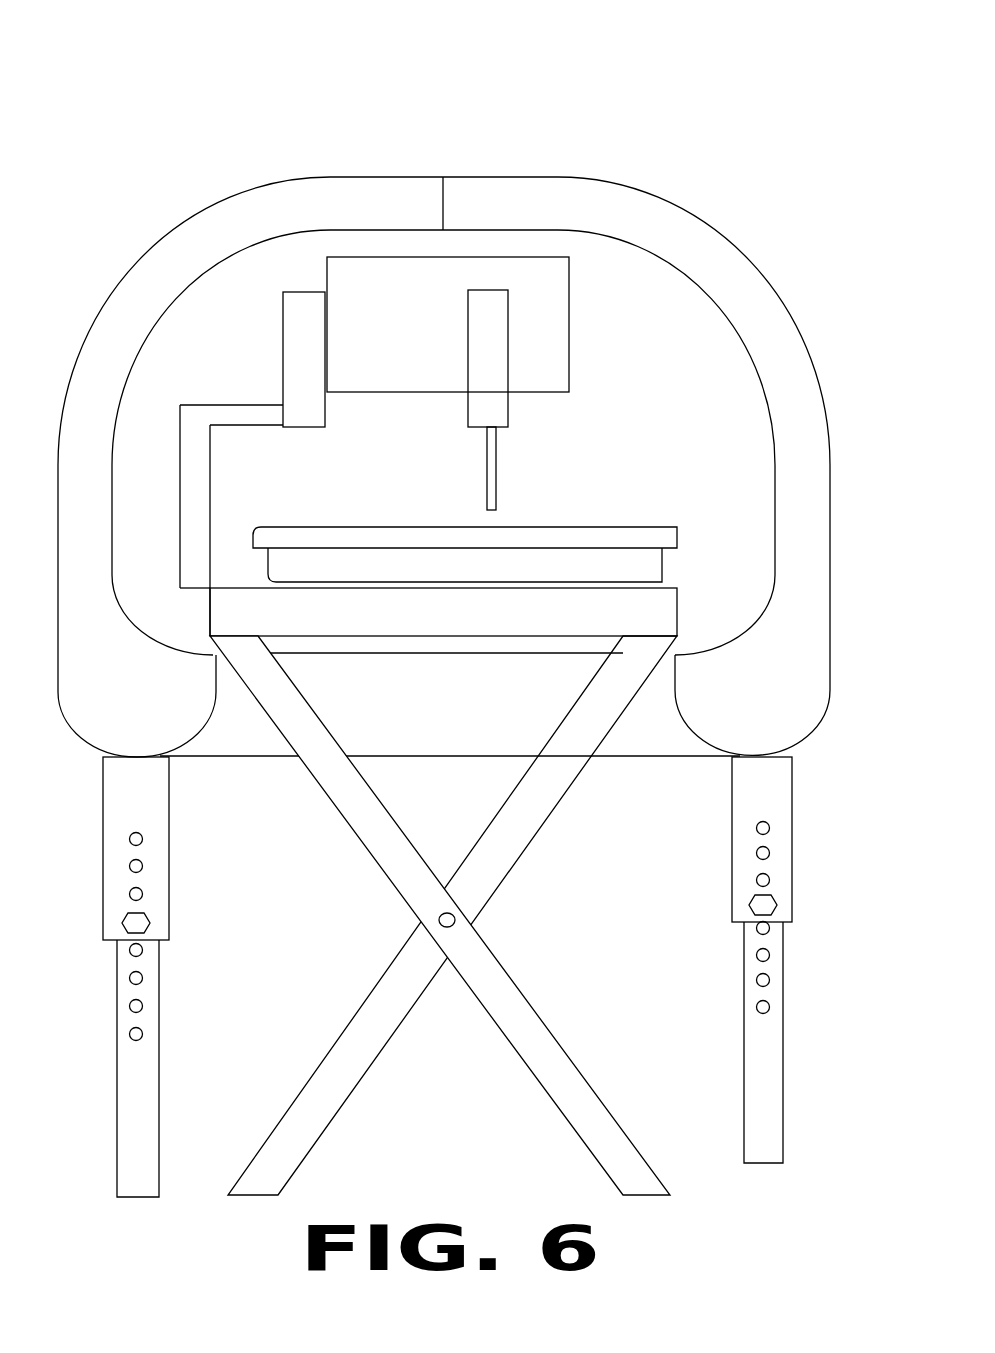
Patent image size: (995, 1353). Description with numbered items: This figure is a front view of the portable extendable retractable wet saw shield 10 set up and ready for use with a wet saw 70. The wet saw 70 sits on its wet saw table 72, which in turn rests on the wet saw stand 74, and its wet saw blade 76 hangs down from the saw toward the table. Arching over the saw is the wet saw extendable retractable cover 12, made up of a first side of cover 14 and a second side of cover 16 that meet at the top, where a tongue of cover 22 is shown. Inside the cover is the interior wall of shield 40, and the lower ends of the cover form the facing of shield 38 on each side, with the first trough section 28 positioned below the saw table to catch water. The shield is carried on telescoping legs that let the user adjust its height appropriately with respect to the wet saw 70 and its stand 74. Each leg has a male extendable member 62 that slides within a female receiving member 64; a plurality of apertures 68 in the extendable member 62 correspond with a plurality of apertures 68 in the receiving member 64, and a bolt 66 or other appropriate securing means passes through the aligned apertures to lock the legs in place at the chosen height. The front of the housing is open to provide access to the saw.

The portable extendable retractable wet saw shield 10 is at (183, 192).
The wet saw extendable retractable cover 12 is at (278, 158).
The first side of cover 14 is at (133, 286).
The second side of cover 16 is at (745, 277).
The tongue of cover 22 is at (482, 200).
The first trough section 28 is at (428, 705).
The facing of shield 38 is at (83, 542).
The interior wall of shield 40 is at (664, 354).
The extendable member 62 is at (153, 1017).
The receiving member 64 is at (160, 815).
The throughbore 66 is at (140, 922).
The fastening element 68 is at (138, 866).
The wet saw 70 is at (300, 362).
The wet saw table 72 is at (330, 527).
The wet saw stand 74 is at (373, 830).
The wet saw blade 76 is at (490, 470).